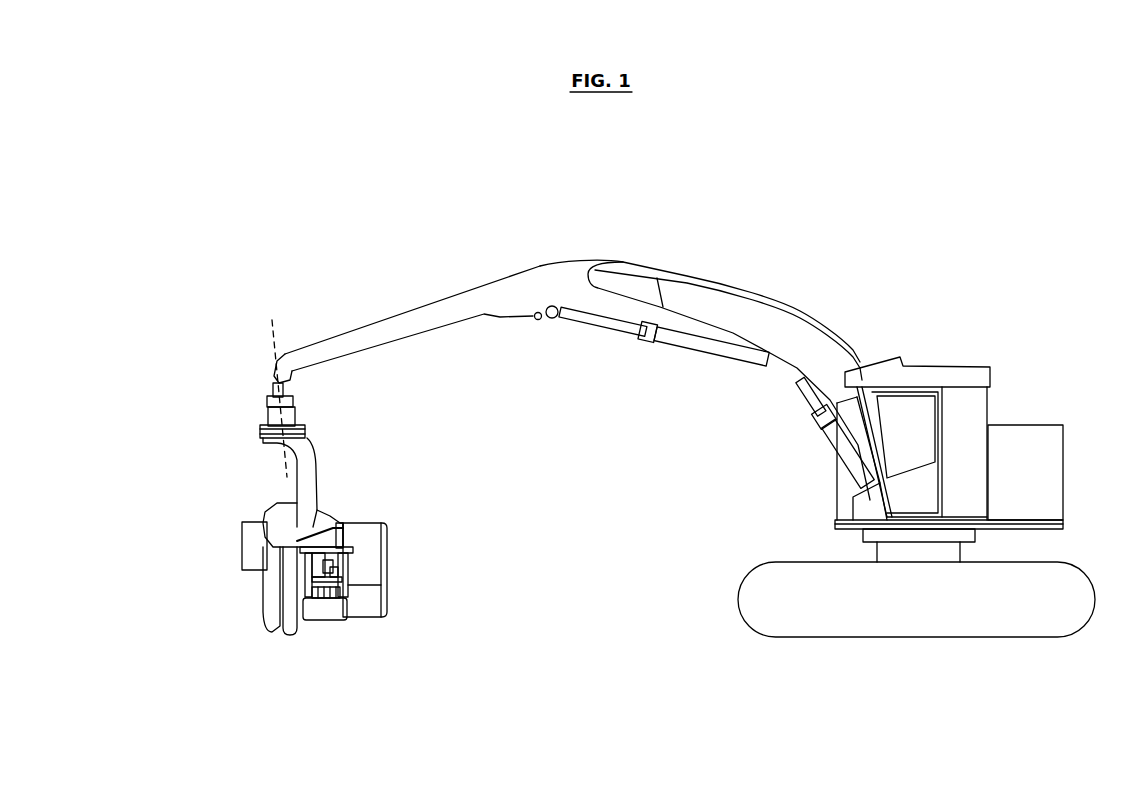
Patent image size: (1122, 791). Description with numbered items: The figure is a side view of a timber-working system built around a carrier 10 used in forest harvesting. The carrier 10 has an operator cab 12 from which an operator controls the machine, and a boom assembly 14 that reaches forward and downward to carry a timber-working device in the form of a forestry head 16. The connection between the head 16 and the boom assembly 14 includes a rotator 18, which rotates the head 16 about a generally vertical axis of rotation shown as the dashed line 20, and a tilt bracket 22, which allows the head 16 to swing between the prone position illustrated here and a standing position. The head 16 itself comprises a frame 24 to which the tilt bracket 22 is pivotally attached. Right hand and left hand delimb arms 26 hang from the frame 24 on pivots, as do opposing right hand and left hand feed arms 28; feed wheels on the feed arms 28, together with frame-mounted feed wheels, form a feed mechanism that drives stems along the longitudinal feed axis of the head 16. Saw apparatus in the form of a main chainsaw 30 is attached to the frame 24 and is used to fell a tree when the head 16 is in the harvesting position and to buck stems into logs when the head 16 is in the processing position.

The carrier 10 is at (382, 270).
The operator cab 12 is at (965, 362).
The boom assembly 14 is at (733, 283).
The forestry head 16 is at (415, 508).
The rotator 18 is at (292, 407).
The axis of rotation 20 is at (272, 387).
The tilt bracket 22 is at (318, 490).
The frame 24 is at (277, 523).
The delimb arms 26 is at (268, 632).
The feed arms 28 is at (327, 610).
The main chainsaw 30 is at (383, 628).